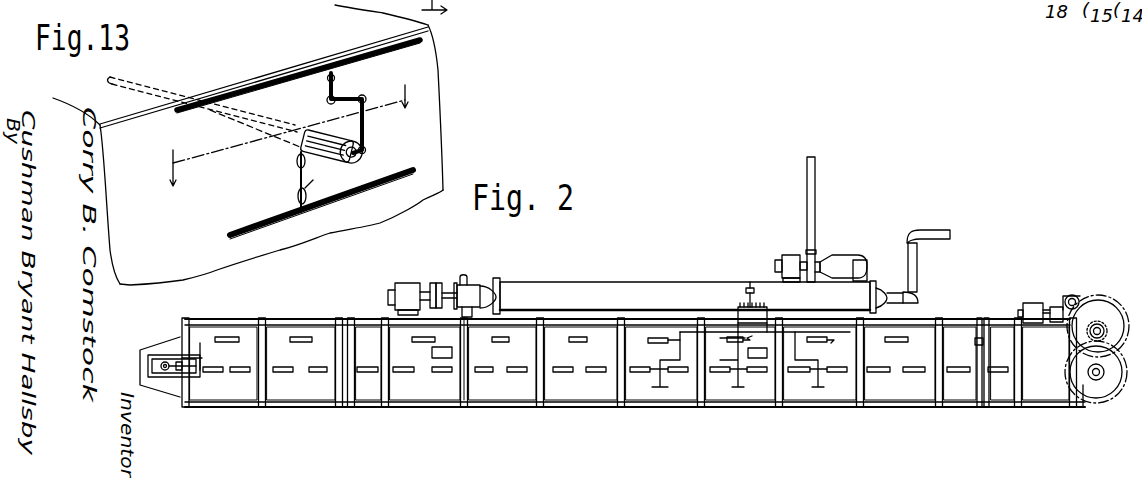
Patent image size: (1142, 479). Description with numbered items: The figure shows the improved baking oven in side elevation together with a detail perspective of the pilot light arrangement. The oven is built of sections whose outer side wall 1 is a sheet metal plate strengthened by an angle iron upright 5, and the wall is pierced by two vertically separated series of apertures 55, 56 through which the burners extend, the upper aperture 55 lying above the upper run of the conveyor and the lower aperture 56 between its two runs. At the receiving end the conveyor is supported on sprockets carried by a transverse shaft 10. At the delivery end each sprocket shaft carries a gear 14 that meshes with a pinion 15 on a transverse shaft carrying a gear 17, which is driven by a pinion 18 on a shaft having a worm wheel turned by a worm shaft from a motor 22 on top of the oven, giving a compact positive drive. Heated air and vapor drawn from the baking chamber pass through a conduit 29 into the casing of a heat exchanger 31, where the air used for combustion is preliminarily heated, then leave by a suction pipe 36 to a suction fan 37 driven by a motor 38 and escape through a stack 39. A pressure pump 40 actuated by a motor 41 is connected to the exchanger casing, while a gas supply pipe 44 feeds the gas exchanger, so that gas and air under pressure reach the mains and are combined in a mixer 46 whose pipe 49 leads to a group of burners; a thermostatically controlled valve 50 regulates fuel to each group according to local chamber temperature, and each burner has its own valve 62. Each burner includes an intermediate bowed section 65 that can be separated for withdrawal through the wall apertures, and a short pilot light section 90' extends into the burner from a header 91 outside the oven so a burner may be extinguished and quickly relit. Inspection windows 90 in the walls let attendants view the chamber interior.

In FIG. 13, the outer side wall 1 is at (248, 145).
In FIG. 13, the angle iron upright 5 is at (442, 9).
In FIG. 2, the shaft 10 is at (162, 375).
In FIG. 13, the gear 14 is at (284, 129).
In FIG. 2, the gear 14 is at (1133, 372).
In FIG. 2, the pinion 15 is at (1090, 333).
In FIG. 2, the gear 17 is at (1126, 308).
In FIG. 2, the pinion 18 is at (1076, 298).
In FIG. 2, the motor 22 is at (1028, 303).
In FIG. 2, the conduit 29 is at (478, 359).
In FIG. 2, the heat exchanger 31 is at (585, 284).
In FIG. 2, the suction pipe 36 is at (857, 266).
In FIG. 2, the suction fan 37 is at (808, 265).
In FIG. 2, the motor 38 is at (789, 258).
In FIG. 2, the stack 39 is at (814, 191).
In FIG. 2, the pressure pump 40 is at (466, 290).
In FIG. 2, the motor 41 is at (413, 287).
In FIG. 2, the gas supply pipe 44 is at (918, 233).
In FIG. 2, the mixer 46 is at (735, 310).
In FIG. 2, the pipe 49 is at (690, 331).
In FIG. 2, the thermostatically controlled valve 50 is at (748, 290).
In FIG. 2, the aperture 55 is at (656, 342).
In FIG. 2, the aperture 56 is at (643, 372).
In FIG. 13, the valve 62 is at (340, 78).
In FIG. 13, the intermediate bowed section 65 is at (178, 92).
In FIG. 2, the inspection window 90 is at (597, 389).
In FIG. 13, the pilot light section 90' is at (280, 137).
In FIG. 13, the header 91 is at (268, 220).